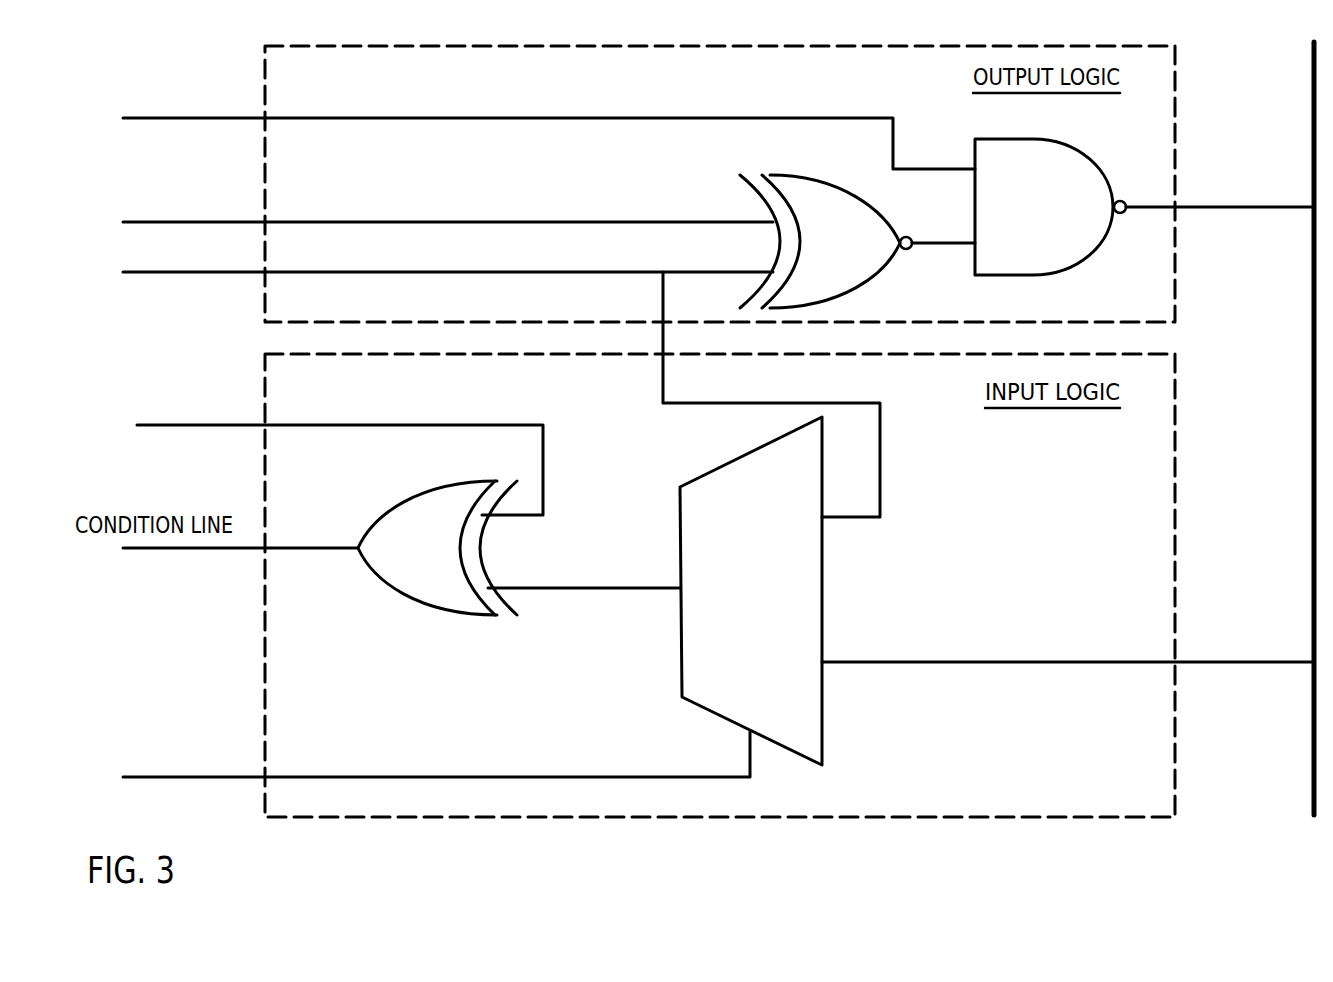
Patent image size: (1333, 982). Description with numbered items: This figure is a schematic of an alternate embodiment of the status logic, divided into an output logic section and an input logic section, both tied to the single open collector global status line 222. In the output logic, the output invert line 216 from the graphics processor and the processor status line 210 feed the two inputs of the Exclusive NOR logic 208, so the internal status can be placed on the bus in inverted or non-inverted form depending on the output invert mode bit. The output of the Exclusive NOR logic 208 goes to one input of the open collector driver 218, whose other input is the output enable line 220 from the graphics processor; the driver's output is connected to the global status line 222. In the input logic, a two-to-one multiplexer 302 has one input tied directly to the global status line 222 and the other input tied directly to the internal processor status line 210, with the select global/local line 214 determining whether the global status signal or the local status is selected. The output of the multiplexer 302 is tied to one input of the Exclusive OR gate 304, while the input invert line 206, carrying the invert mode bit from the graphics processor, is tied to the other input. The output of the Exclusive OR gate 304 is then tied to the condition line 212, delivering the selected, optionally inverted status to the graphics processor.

The output enable line 220 is at (455, 118).
The output invert line 216 is at (565, 222).
The processor status line 210 is at (535, 272).
The Exclusive NOR logic 208 is at (858, 256).
The open collector driver 218 is at (1040, 241).
The input invert line 206 is at (445, 425).
The condition line 212 is at (330, 548).
The Exclusive OR gate 304 is at (435, 566).
The multiplexer 302 is at (758, 677).
The select global/local line 214 is at (530, 777).
The global status line 222 is at (1312, 760).